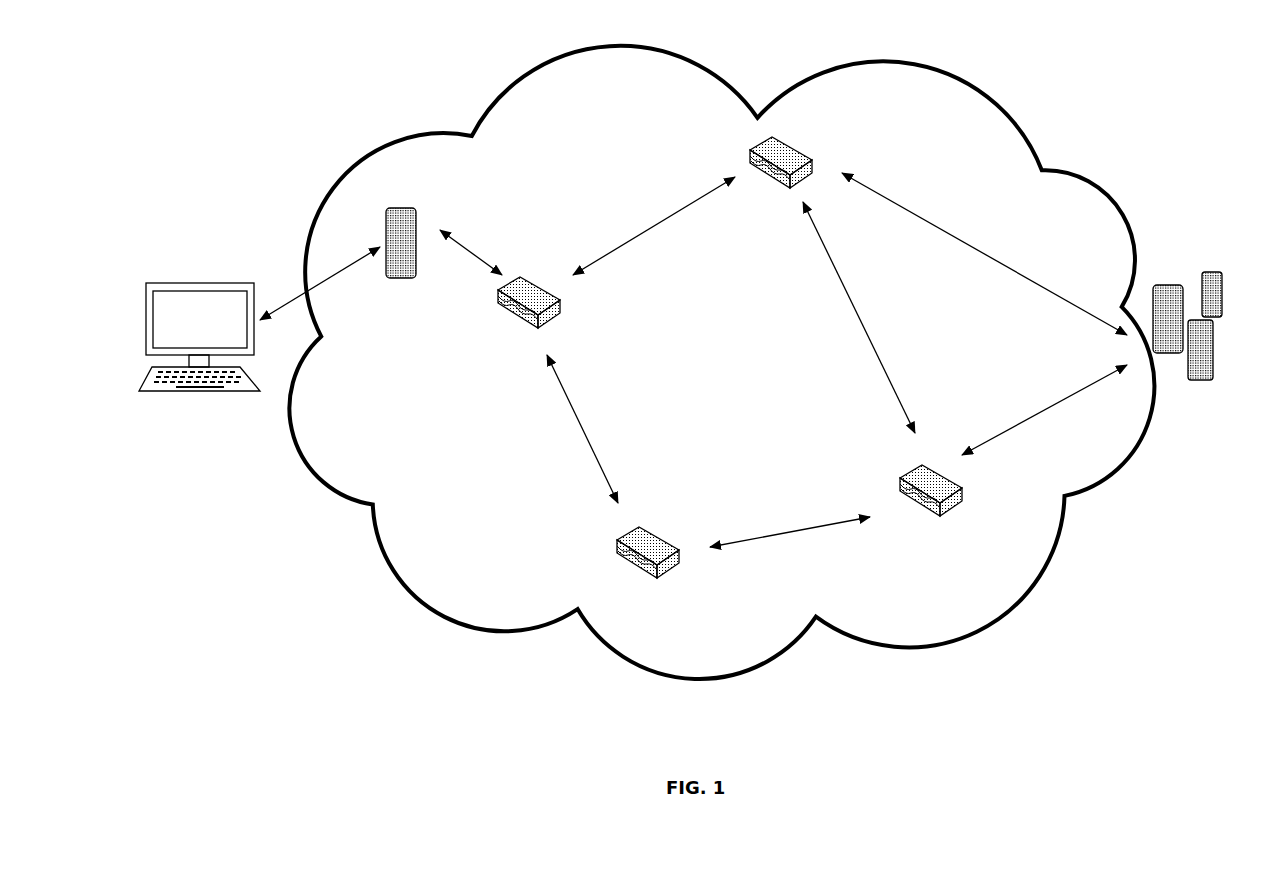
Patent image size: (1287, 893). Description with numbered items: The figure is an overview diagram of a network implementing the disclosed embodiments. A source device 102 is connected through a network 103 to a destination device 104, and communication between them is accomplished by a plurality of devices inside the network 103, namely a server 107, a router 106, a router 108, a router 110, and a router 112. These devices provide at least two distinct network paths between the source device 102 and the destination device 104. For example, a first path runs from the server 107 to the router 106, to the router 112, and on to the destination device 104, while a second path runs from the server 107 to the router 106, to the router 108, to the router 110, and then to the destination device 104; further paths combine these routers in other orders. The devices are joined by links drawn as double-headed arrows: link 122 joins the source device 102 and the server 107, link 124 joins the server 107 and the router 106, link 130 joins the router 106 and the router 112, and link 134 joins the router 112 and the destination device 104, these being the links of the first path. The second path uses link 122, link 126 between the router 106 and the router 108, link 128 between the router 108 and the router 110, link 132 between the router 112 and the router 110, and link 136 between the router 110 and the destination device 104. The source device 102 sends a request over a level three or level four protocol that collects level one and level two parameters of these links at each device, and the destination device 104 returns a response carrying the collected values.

The source device 102 is at (198, 397).
The network 103 is at (947, 65).
The destination device 104 is at (1193, 268).
The router 106 is at (512, 317).
The server 107 is at (411, 208).
The router 108 is at (663, 542).
The router 110 is at (945, 517).
The router 112 is at (797, 142).
The link 122 is at (334, 278).
The link 124 is at (482, 248).
The link 126 is at (590, 435).
The link 128 is at (770, 537).
The link 130 is at (648, 223).
The link 132 is at (850, 290).
The link 134 is at (992, 258).
The link 136 is at (1040, 413).